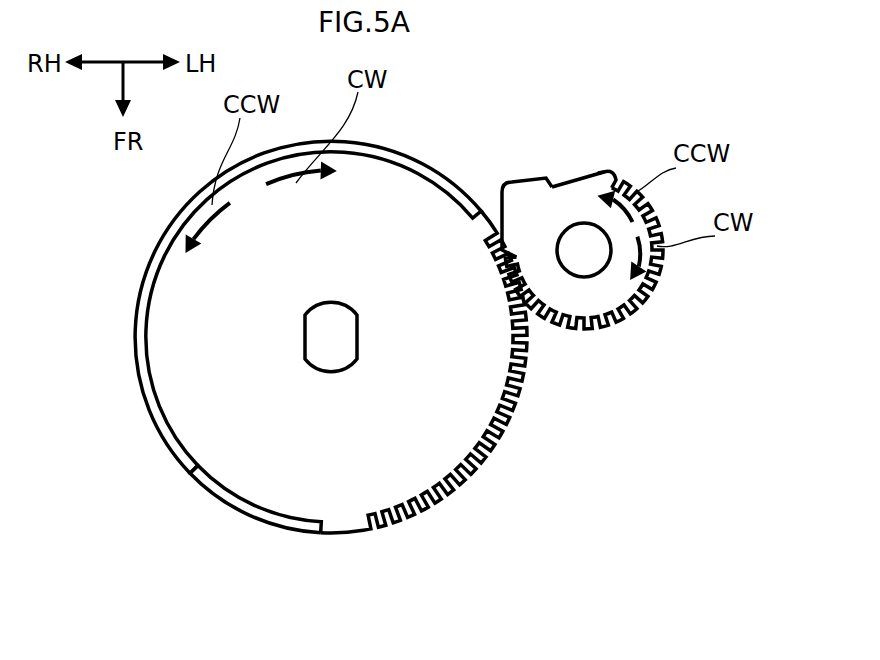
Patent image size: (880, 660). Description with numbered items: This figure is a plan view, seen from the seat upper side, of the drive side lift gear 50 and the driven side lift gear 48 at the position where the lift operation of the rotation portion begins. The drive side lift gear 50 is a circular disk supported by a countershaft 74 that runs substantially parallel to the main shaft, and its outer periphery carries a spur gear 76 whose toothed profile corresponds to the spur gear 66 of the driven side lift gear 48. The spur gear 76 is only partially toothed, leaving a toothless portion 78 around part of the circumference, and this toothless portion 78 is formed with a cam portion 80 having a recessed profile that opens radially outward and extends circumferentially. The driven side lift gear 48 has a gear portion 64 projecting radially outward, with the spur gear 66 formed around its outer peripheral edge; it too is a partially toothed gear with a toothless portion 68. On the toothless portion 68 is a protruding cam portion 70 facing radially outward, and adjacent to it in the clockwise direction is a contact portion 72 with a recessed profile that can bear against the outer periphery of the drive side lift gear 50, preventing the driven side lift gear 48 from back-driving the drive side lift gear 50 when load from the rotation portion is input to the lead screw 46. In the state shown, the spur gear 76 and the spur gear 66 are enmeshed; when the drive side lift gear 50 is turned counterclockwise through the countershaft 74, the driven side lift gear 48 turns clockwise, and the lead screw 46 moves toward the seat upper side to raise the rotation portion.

The lead screw 46 is at (585, 278).
The driven side lift gear 48 is at (598, 170).
The drive side lift gear 50 is at (316, 342).
The gear portion 64 is at (611, 240).
The spur gear 66 is at (632, 303).
The toothless portion 68 is at (578, 171).
The cam portion 70 is at (528, 180).
The contact portion 72 is at (620, 176).
The countershaft 74 is at (348, 346).
The spur gear 76 is at (487, 452).
The toothless portion 78 is at (136, 371).
The cam portion 80 is at (193, 471).